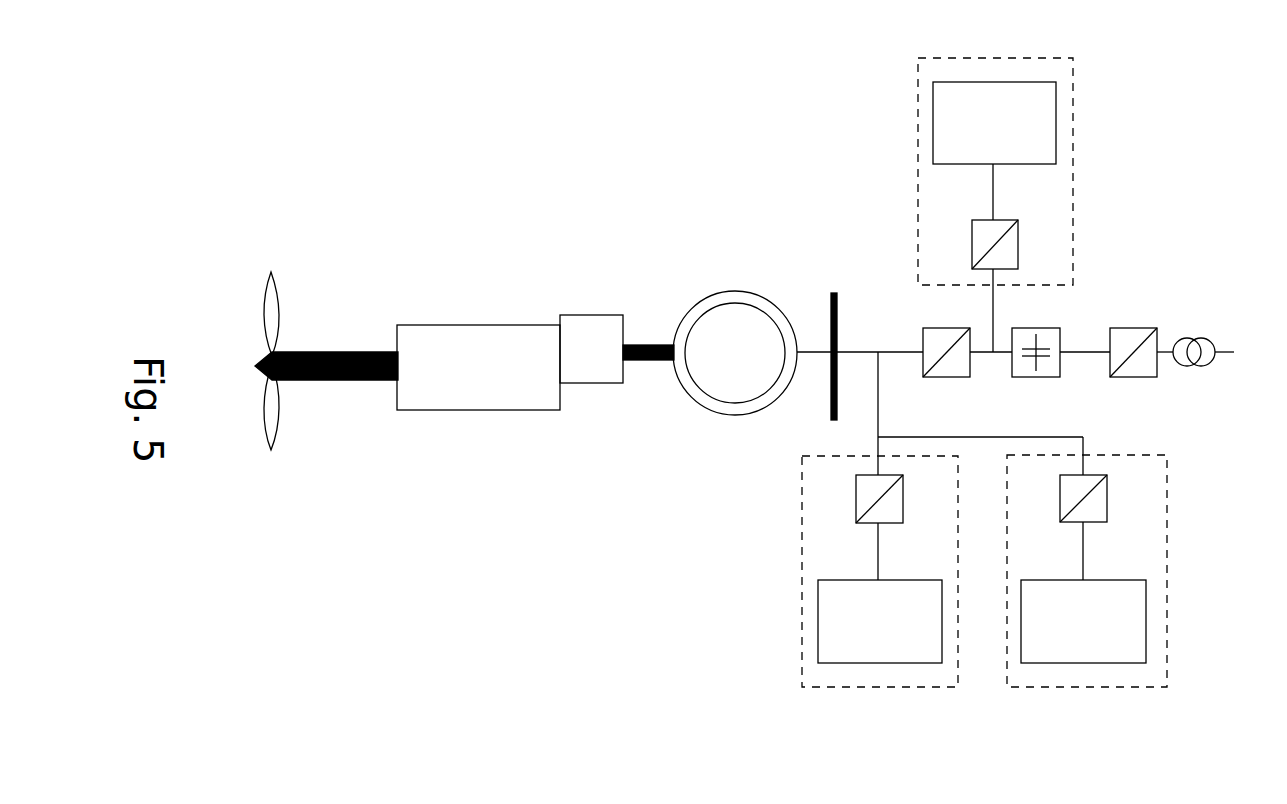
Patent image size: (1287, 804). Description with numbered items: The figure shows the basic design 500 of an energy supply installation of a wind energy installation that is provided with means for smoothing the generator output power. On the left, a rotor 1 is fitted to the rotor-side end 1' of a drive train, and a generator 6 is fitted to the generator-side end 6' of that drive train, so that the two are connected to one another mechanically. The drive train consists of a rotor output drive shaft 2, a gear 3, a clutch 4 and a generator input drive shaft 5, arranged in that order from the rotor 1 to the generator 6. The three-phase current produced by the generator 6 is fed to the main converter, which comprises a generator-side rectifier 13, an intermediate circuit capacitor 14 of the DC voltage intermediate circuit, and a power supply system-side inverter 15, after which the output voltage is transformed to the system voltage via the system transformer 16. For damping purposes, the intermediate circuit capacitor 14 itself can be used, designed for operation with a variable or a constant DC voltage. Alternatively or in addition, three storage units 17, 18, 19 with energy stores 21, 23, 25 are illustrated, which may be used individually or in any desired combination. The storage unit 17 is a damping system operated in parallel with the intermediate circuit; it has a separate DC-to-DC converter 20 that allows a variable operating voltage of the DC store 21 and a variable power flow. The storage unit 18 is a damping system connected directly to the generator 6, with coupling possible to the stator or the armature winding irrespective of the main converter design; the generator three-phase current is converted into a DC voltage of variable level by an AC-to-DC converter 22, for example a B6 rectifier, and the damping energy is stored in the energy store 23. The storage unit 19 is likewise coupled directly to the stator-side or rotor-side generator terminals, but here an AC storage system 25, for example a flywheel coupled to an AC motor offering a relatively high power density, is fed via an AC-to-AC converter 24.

The rotor 1 is at (282, 338).
The rotor-side end 1' is at (322, 279).
The rotor output drive shaft 2 is at (333, 351).
The gear 3 is at (478, 367).
The clutch 4 is at (591, 349).
The generator input drive shaft 5 is at (641, 345).
The generator 6 is at (735, 353).
The generator-side end 6' is at (685, 420).
The generator-side rectifier 13 is at (924, 330).
The intermediate circuit capacitor 14 is at (1041, 378).
The power supply system-side inverter 15 is at (1126, 328).
The system transformer 16 is at (1206, 364).
The storage unit 17 is at (1074, 130).
The storage unit 18 is at (894, 688).
The storage unit 19 is at (1087, 688).
The DC-to-DC converter 20 is at (972, 245).
The DC store 21 is at (933, 125).
The AC-to-DC converter 22 is at (856, 500).
The energy store 23 is at (818, 641).
The AC-to-AC converter 24 is at (1107, 495).
The AC storage system 25 is at (1146, 620).
The basic design 500 is at (631, 572).